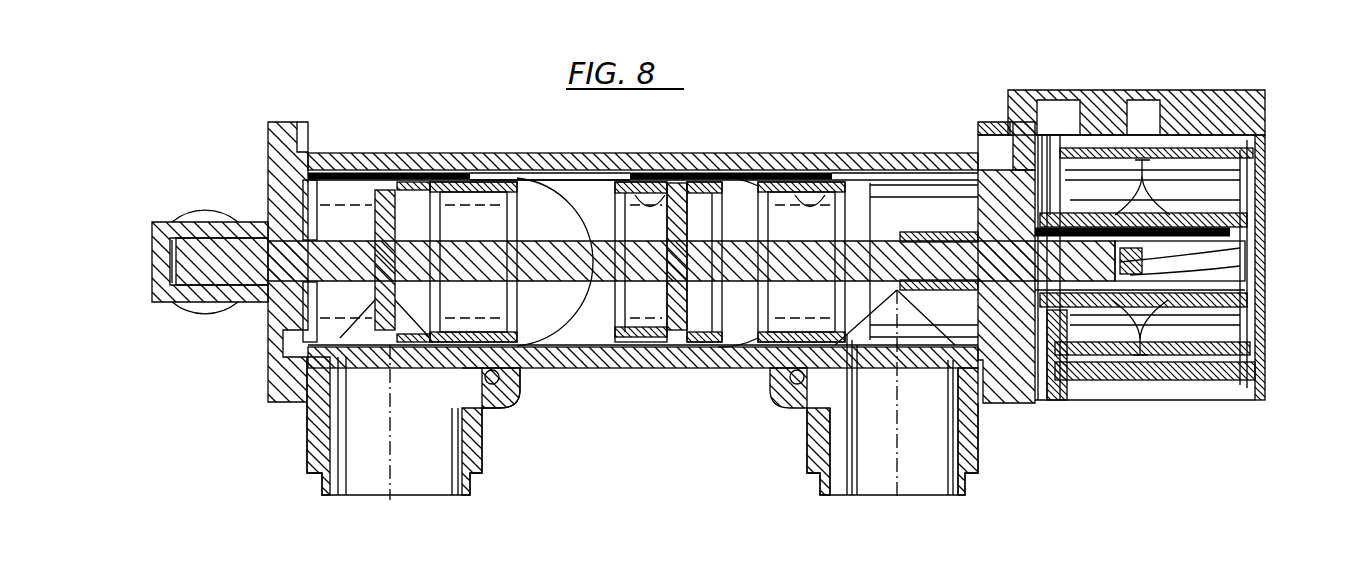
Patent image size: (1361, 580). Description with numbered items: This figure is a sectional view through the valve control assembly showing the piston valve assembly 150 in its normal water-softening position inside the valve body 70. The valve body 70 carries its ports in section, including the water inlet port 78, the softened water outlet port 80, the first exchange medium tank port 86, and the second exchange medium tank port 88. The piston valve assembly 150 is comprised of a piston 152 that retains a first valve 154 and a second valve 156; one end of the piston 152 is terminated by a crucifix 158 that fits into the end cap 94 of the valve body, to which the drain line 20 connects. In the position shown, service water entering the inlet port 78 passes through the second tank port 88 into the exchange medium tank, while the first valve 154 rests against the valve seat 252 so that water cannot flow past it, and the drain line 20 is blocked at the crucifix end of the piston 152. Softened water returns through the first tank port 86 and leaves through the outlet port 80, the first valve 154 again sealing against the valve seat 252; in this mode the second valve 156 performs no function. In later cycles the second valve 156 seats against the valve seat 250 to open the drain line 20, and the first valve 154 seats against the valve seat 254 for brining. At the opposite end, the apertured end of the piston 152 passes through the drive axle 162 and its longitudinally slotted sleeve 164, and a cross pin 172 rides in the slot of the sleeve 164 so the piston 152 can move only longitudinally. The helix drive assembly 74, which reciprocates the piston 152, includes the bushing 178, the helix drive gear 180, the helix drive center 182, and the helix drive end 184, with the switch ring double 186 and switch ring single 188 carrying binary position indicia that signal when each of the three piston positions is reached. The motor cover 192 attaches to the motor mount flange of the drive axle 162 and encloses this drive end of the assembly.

The valve assembly 70 is at (355, 76).
The end cap 94 is at (268, 165).
The line 20 is at (200, 212).
The crucifix 158 is at (255, 262).
The valve assembly 150 is at (350, 288).
The second valve 156 is at (410, 190).
The valve seat 250 is at (452, 165).
The water inlet port 78 is at (566, 227).
The valve seat 252 is at (650, 165).
The first valve 154 is at (697, 372).
The softened water outlet port 80 is at (752, 223).
The valve seat 254 is at (800, 170).
The piston 152 is at (872, 243).
The second exchange medium tank port 88 is at (390, 497).
The first exchange medium tank port 86 is at (935, 498).
The drive axle 162 is at (1023, 403).
The helix drive assembly 74 is at (1192, 75).
The motor cover 192 is at (1258, 112).
The bushing 178 is at (1043, 135).
The longitudinally slotted sleeve 164 is at (1252, 237).
The cross pin 172 is at (1252, 274).
The helix drive end 184 is at (1267, 333).
The helix drive center 182 is at (1130, 380).
The switch ring double 186 is at (1193, 382).
The switch ring single 188 is at (1237, 382).
The helix drive gear 180 is at (1073, 395).